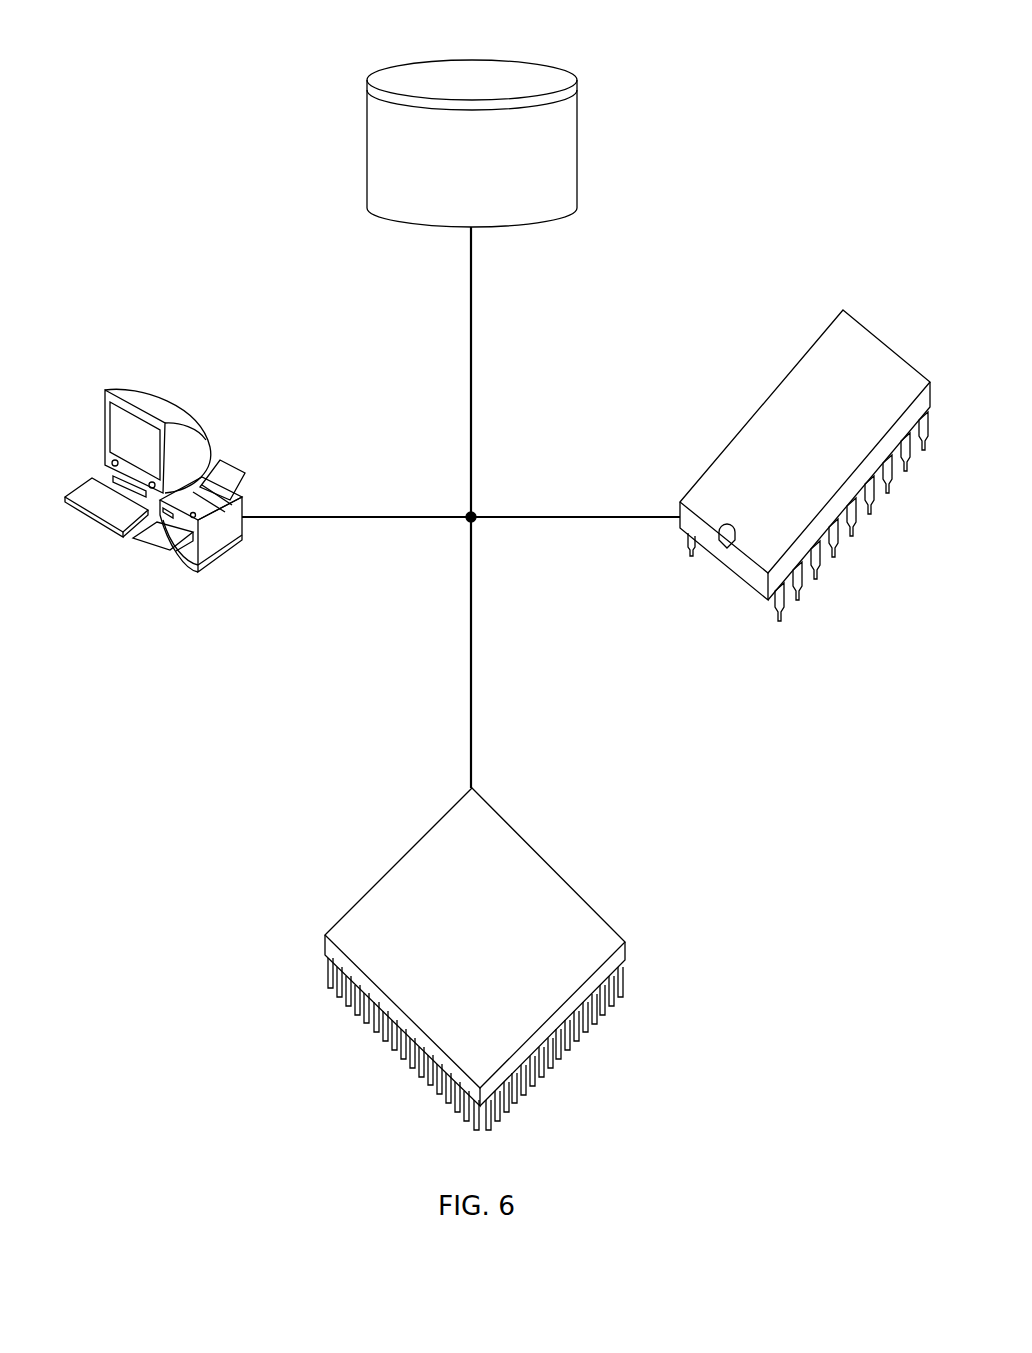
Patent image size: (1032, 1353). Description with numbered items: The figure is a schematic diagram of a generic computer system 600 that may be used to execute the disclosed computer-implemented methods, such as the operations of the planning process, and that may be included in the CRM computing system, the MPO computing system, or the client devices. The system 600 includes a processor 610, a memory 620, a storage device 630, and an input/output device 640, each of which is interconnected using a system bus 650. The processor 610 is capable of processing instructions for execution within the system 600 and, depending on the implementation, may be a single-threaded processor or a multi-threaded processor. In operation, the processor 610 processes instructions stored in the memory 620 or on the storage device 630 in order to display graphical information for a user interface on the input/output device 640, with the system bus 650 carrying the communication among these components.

The computer system 600 is at (106, 165).
The processor 610 is at (398, 862).
The memory 620 is at (760, 407).
The storage device 630 is at (462, 58).
The input/output device 640 is at (105, 390).
The system bus 650 is at (363, 517).